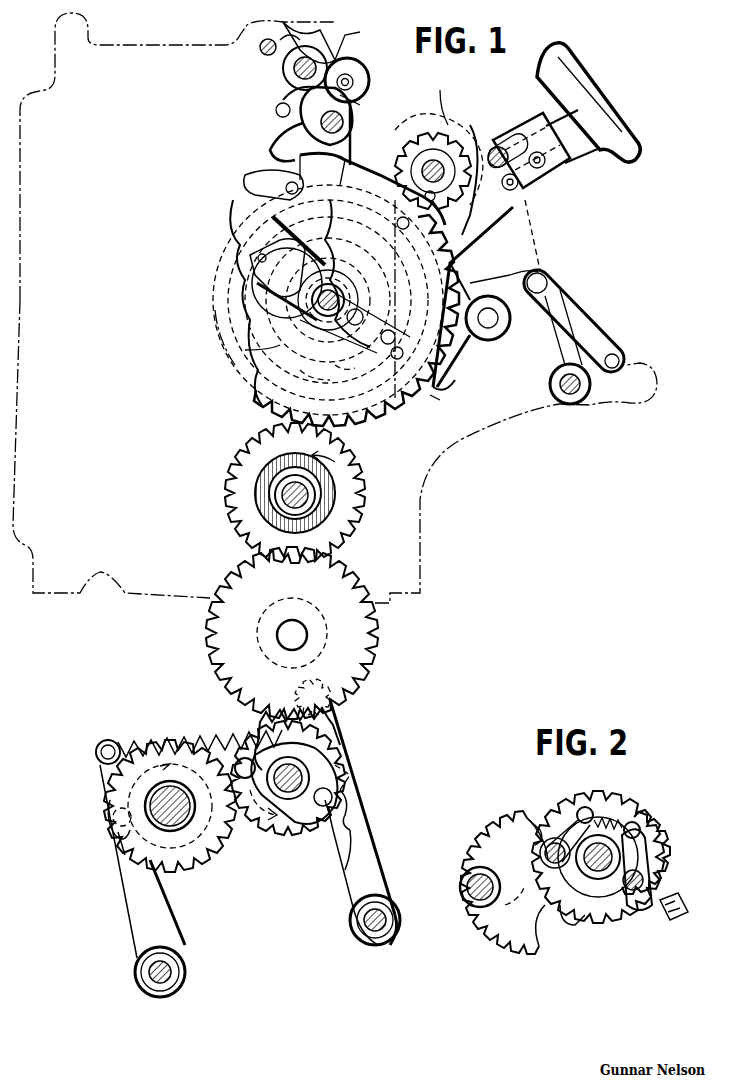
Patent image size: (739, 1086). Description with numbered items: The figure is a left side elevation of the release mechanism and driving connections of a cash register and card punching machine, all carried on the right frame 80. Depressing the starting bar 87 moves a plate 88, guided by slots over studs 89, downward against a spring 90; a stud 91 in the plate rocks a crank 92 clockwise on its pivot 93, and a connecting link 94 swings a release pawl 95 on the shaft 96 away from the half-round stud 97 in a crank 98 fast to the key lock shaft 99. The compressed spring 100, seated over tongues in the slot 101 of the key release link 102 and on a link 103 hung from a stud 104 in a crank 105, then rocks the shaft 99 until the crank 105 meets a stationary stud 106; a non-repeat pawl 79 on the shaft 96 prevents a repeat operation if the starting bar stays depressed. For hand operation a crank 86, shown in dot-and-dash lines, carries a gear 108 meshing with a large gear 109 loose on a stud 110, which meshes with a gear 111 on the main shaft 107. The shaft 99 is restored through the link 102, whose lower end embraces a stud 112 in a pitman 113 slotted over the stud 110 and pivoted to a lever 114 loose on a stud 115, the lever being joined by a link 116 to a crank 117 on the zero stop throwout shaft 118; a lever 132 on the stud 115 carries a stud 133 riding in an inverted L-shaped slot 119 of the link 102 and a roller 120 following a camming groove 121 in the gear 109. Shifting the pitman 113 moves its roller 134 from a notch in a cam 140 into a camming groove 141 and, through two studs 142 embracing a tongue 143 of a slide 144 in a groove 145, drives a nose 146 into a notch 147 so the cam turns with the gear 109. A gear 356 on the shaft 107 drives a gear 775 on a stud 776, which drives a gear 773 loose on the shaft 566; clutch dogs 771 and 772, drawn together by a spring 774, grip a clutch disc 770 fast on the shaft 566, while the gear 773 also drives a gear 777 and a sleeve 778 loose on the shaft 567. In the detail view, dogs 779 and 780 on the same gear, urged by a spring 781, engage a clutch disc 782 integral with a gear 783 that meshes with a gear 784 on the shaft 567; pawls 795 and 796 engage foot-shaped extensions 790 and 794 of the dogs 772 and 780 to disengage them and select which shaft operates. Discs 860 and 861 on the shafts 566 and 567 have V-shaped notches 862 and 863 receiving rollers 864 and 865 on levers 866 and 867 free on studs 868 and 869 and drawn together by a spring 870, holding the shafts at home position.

In FIG. 1, the right frame 80 is at (132, 45).
In FIG. 1, the starting bar 87 is at (612, 156).
In FIG. 1, the plate 88 is at (530, 192).
In FIG. 1, the studs 89 is at (495, 140).
In FIG. 1, the spring 90 is at (512, 192).
In FIG. 1, the stud 91 is at (500, 198).
In FIG. 1, the crank 92 is at (452, 150).
In FIG. 1, the pivot 93 is at (430, 160).
In FIG. 1, the crank 86 is at (439, 137).
In FIG. 1, the gear 108 is at (478, 128).
In FIG. 1, the connecting link 94 is at (345, 185).
In FIG. 1, the release pawl 95 is at (350, 142).
In FIG. 1, the shaft 96 is at (344, 122).
In FIG. 1, the compressed spring 100 is at (350, 102).
In FIG. 1, the non-repeat pawl 79 is at (295, 125).
In FIG. 1, the crank 98 is at (276, 110).
In FIG. 1, the half-round stud 97 is at (283, 100).
In FIG. 1, the key lock shaft 99 is at (294, 70).
In FIG. 1, the slot 101 is at (360, 65).
In FIG. 1, the stud 104 is at (355, 80).
In FIG. 1, the key release link 102 is at (361, 42).
In FIG. 1, the link 103 is at (340, 55).
In FIG. 1, the crank 105 is at (288, 32).
In FIG. 1, the stationary stud 106 is at (262, 47).
In FIG. 1, the stud 133 is at (262, 175).
In FIG. 1, the inverted L-shaped slot 119 is at (255, 185).
In FIG. 1, the large gear 109 is at (262, 412).
In FIG. 1, the camming groove 121 is at (405, 243).
In FIG. 1, the stud 110 is at (337, 300).
In FIG. 1, the groove 145 is at (257, 283).
In FIG. 1, the stud 112 is at (255, 253).
In FIG. 1, the pitman 113 is at (252, 285).
In FIG. 1, the cam 140 is at (232, 340).
In FIG. 1, the slide 144 is at (245, 350).
In FIG. 1, the roller 134 is at (345, 333).
In FIG. 1, the tongue 143 is at (396, 325).
In FIG. 1, the studs 142 is at (392, 360).
In FIG. 1, the camming groove 141 is at (318, 372).
In FIG. 1, the nose 146 is at (342, 372).
In FIG. 1, the roller 120 is at (398, 221).
In FIG. 1, the lever 132 is at (472, 287).
In FIG. 1, the stud 115 is at (508, 322).
In FIG. 1, the lever 114 is at (458, 365).
In FIG. 1, the notch 147 is at (440, 398).
In FIG. 1, the link 116 is at (560, 335).
In FIG. 1, the crank 117 is at (565, 370).
In FIG. 1, the zero stop throwout shaft 118 is at (560, 388).
In FIG. 1, the gear 111 is at (250, 455).
In FIG. 1, the main shaft 107 is at (290, 490).
In FIG. 1, the gear 356 is at (250, 512).
In FIG. 1, the gear 775 is at (368, 652).
In FIG. 1, the stud 776 is at (288, 622).
In FIG. 1, the spring 870 is at (180, 735).
In FIG. 1, the clutch dog 771 is at (265, 722).
In FIG. 1, the spring 774 is at (336, 716).
In FIG. 1, the clutch disc 770 is at (335, 742).
In FIG. 1, the disc 860 is at (280, 830).
In FIG. 1, the shaft 566 is at (300, 835).
In FIG. 2, the shaft 566 is at (595, 878).
In FIG. 1, the V-shaped notch 862 is at (340, 760).
In FIG. 1, the roller 864 is at (345, 772).
In FIG. 1, the clutch dog 772 is at (347, 783).
In FIG. 1, the gear 773 is at (350, 830).
In FIG. 2, the gear 773 is at (562, 920).
In FIG. 1, the foot-shaped extension 790 is at (345, 870).
In FIG. 1, the lever 866 is at (365, 853).
In FIG. 1, the stud 868 is at (364, 920).
In FIG. 1, the sleeve 778 is at (160, 822).
In FIG. 1, the shaft 567 is at (160, 797).
In FIG. 2, the shaft 567 is at (492, 882).
In FIG. 1, the gear 777 is at (172, 870).
In FIG. 1, the lever 867 is at (128, 883).
In FIG. 1, the stud 869 is at (150, 972).
In FIG. 1, the roller 865 is at (110, 803).
In FIG. 1, the V-shaped notch 863 is at (120, 832).
In FIG. 1, the disc 861 is at (120, 855).
In FIG. 2, the gear 784 is at (508, 948).
In FIG. 2, the dog 779 is at (532, 843).
In FIG. 2, the dog 780 is at (598, 925).
In FIG. 2, the gear 783 is at (574, 813).
In FIG. 2, the spring 781 is at (585, 806).
In FIG. 2, the clutch disc 782 is at (628, 810).
In FIG. 2, the foot-shaped extension 794 is at (637, 915).
In FIG. 2, the pawl 796 is at (650, 905).
In FIG. 2, the pawl 795 is at (673, 918).